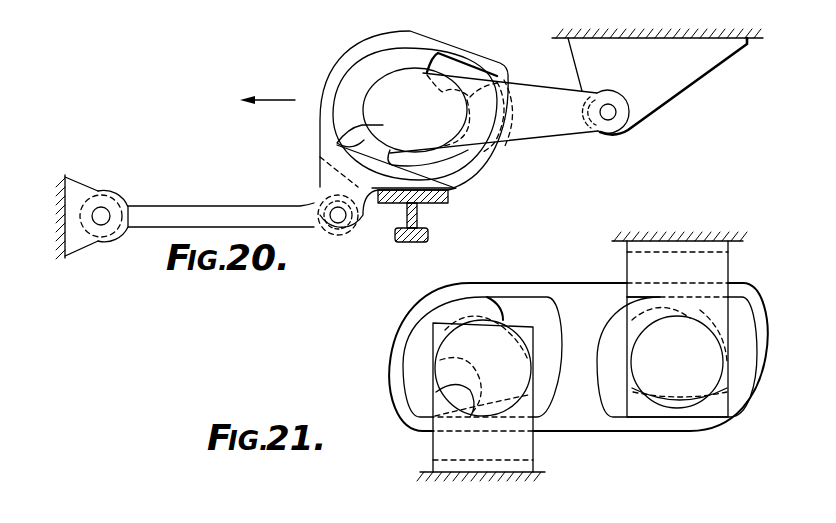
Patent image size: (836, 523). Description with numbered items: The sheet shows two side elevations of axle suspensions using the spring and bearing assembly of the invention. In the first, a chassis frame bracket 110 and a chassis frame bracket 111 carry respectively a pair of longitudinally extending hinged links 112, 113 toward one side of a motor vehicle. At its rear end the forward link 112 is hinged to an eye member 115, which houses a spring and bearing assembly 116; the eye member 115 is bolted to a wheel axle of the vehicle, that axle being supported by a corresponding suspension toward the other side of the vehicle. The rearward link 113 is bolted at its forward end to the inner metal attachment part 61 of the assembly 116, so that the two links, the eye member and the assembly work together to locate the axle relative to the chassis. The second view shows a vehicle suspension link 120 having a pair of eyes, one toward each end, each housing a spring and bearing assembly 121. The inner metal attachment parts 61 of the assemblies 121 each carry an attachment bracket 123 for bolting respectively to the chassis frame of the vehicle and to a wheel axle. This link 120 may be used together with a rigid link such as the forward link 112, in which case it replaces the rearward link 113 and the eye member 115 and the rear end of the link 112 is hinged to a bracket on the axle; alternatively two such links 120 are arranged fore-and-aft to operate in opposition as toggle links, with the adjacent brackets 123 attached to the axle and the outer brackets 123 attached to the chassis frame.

In FIG. 20, the inner metal attachment part 61 is at (444, 89).
In FIG. 21, the inner metal attachment part 61 is at (455, 360).
In FIG. 20, the chassis frame bracket 110 is at (80, 183).
In FIG. 20, the chassis frame bracket 111 is at (688, 82).
In FIG. 20, the forward link 112 is at (246, 206).
In FIG. 20, the rearward link 113 is at (537, 125).
In FIG. 20, the eye member 115 is at (457, 173).
In FIG. 20, the spring and bearing assembly 116 is at (352, 82).
In FIG. 21, the vehicle suspension link 120 is at (577, 390).
In FIG. 21, the spring and bearing assembly 121 is at (437, 315).
In FIG. 21, the attachment bracket 123 is at (433, 438).